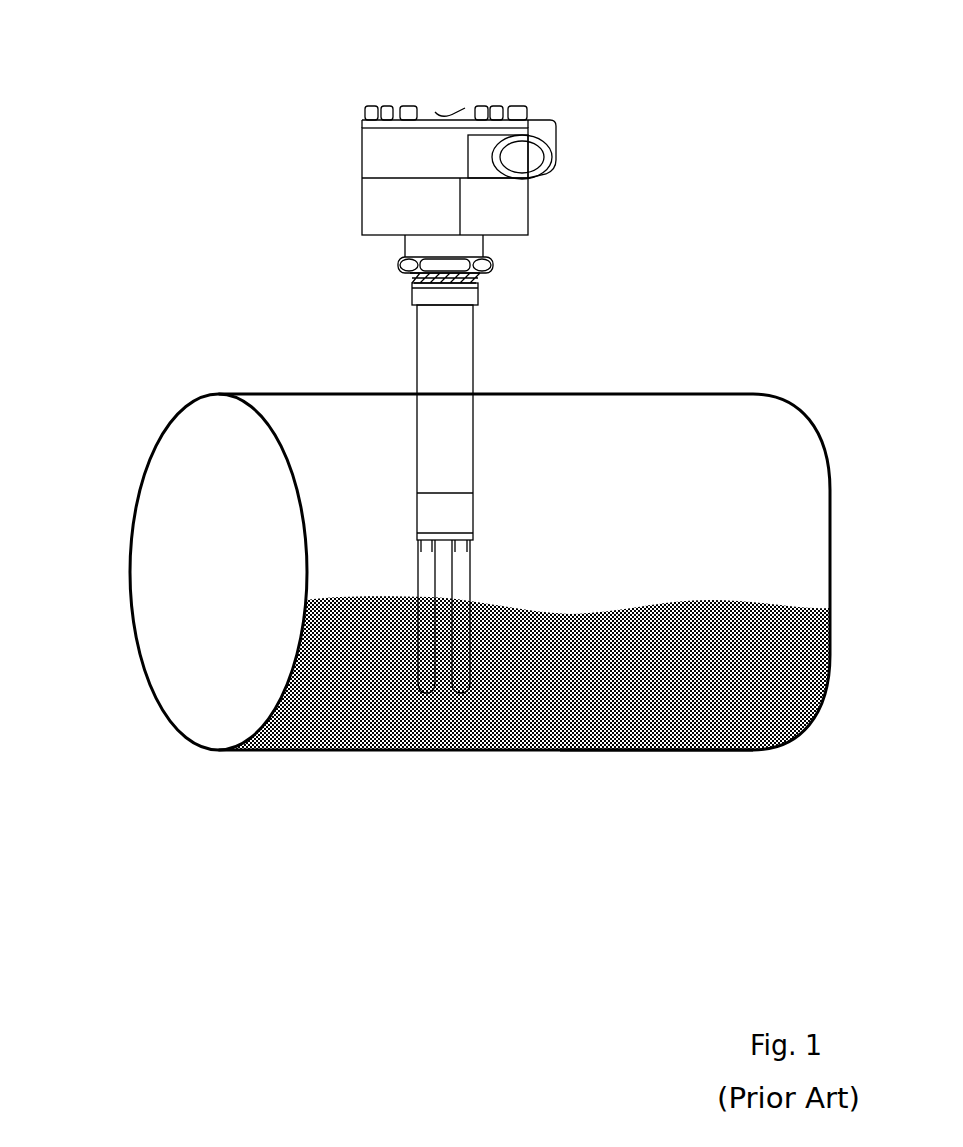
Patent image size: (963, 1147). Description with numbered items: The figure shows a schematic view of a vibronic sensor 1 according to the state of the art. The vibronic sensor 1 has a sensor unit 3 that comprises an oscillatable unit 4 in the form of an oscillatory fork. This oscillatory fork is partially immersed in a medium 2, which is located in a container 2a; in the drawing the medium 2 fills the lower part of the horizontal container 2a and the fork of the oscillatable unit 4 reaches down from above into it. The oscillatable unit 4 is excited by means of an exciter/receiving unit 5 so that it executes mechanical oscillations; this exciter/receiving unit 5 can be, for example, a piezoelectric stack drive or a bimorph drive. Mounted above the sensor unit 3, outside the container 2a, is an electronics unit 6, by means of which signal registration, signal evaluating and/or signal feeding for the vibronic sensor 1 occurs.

The vibronic sensor 1 is at (45, 0).
The medium 2 is at (593, 682).
The container 2a is at (751, 755).
The sensor unit 3 is at (507, 606).
The oscillatable unit 4 is at (406, 628).
The exciter/receiving unit 5 is at (416, 515).
The electronics unit 6 is at (508, 206).